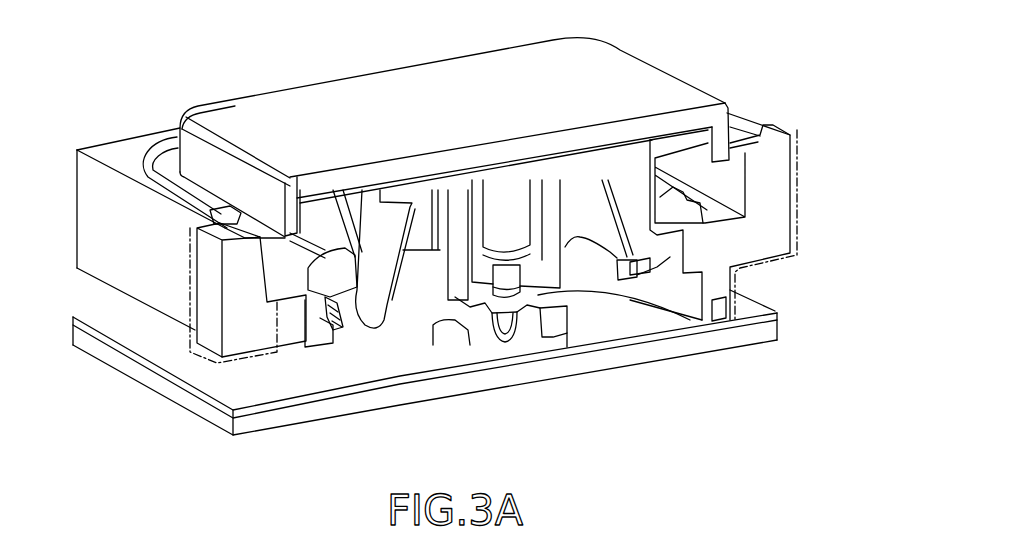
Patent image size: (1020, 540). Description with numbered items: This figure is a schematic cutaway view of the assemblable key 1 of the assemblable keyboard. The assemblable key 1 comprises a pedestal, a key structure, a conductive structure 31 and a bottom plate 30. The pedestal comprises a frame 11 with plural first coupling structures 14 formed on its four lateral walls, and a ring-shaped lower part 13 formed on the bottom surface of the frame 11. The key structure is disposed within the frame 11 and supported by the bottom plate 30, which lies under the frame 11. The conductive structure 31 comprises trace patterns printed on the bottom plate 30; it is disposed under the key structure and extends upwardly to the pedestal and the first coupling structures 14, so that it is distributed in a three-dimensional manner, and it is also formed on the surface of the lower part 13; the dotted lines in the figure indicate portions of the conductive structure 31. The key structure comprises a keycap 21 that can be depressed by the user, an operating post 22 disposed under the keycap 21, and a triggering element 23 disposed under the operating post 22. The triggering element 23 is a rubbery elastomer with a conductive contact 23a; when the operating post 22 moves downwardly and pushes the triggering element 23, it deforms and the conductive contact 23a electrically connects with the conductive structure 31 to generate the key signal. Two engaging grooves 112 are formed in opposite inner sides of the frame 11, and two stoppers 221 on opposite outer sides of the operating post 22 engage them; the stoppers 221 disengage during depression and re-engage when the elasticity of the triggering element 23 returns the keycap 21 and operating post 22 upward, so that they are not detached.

The assemblable key 1 is at (700, 47).
The frame 11 is at (120, 152).
The engaging grooves 112 is at (347, 325).
The lower part 13 is at (290, 380).
The first coupling structures 14 is at (203, 299).
The keycap 21 is at (430, 78).
The operating post 22 is at (460, 198).
The stoppers 221 is at (366, 318).
The triggering element 23 is at (567, 343).
The conductive contact 23a is at (503, 342).
The bottom plate 30 is at (163, 387).
The conductive structure 31 is at (127, 355).